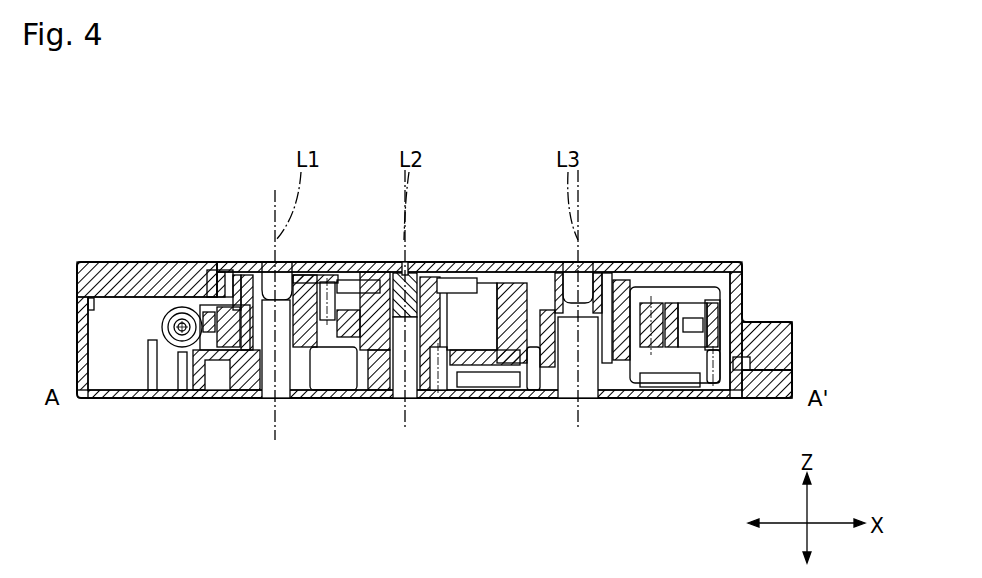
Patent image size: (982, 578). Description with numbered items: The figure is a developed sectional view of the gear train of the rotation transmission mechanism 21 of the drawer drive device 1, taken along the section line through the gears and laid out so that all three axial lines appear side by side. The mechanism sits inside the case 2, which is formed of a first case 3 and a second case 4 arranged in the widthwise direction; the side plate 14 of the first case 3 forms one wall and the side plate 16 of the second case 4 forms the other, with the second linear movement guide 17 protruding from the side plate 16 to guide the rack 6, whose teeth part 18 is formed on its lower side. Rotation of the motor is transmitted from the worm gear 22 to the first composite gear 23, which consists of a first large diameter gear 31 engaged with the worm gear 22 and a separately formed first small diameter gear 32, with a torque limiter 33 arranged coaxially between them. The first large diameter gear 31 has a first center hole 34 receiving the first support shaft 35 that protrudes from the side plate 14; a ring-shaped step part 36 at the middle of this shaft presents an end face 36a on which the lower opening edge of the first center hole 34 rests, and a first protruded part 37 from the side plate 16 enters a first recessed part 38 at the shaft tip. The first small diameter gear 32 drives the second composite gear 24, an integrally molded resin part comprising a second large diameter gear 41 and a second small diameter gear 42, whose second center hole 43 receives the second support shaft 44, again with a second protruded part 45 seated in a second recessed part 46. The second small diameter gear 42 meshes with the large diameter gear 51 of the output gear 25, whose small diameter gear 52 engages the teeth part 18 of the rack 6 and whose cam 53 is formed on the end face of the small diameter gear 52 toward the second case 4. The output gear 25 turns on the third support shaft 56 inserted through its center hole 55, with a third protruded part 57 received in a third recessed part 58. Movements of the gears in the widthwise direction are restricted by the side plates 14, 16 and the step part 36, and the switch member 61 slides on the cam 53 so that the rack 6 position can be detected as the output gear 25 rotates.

The drawer drive device 1 is at (774, 179).
The case 2 is at (850, 308).
The first case 3 is at (792, 390).
The second case 4 is at (792, 347).
The rack 6 is at (726, 320).
The side plate of the first case 14 is at (482, 395).
The side plate of the second case 16 is at (352, 262).
The second linear movement guide 17 is at (705, 262).
The teeth part 18 is at (660, 322).
The rotation transmission mechanism 21 is at (134, 318).
The worm gear 22 is at (150, 388).
The first composite gear 23 is at (238, 256).
The second composite gear 24 is at (378, 256).
The output gear 25 is at (515, 406).
The first large diameter gear 31 is at (215, 392).
The first small diameter gear 32 is at (210, 262).
The torque limiter 33 is at (229, 344).
The first center hole 34 is at (295, 262).
The first support shaft 35 is at (249, 388).
The step part 36 is at (300, 392).
The end face 36a is at (328, 392).
The first protruded part 37 is at (270, 262).
The first recessed part 38 is at (255, 262).
The second large diameter gear 41 is at (485, 262).
The second small diameter gear 42 is at (445, 395).
The second center hole 43 is at (390, 395).
The second support shaft 44 is at (430, 395).
The second protruded part 45 is at (418, 262).
The second recessed part 46 is at (437, 262).
The large diameter gear 51 is at (714, 392).
The small diameter gear 52 is at (668, 262).
The cam 53 is at (610, 262).
The center hole 55 is at (549, 392).
The third support shaft 56 is at (606, 392).
The third protruded part 57 is at (567, 262).
The third recessed part 58 is at (588, 262).
The switch member 61 is at (643, 262).